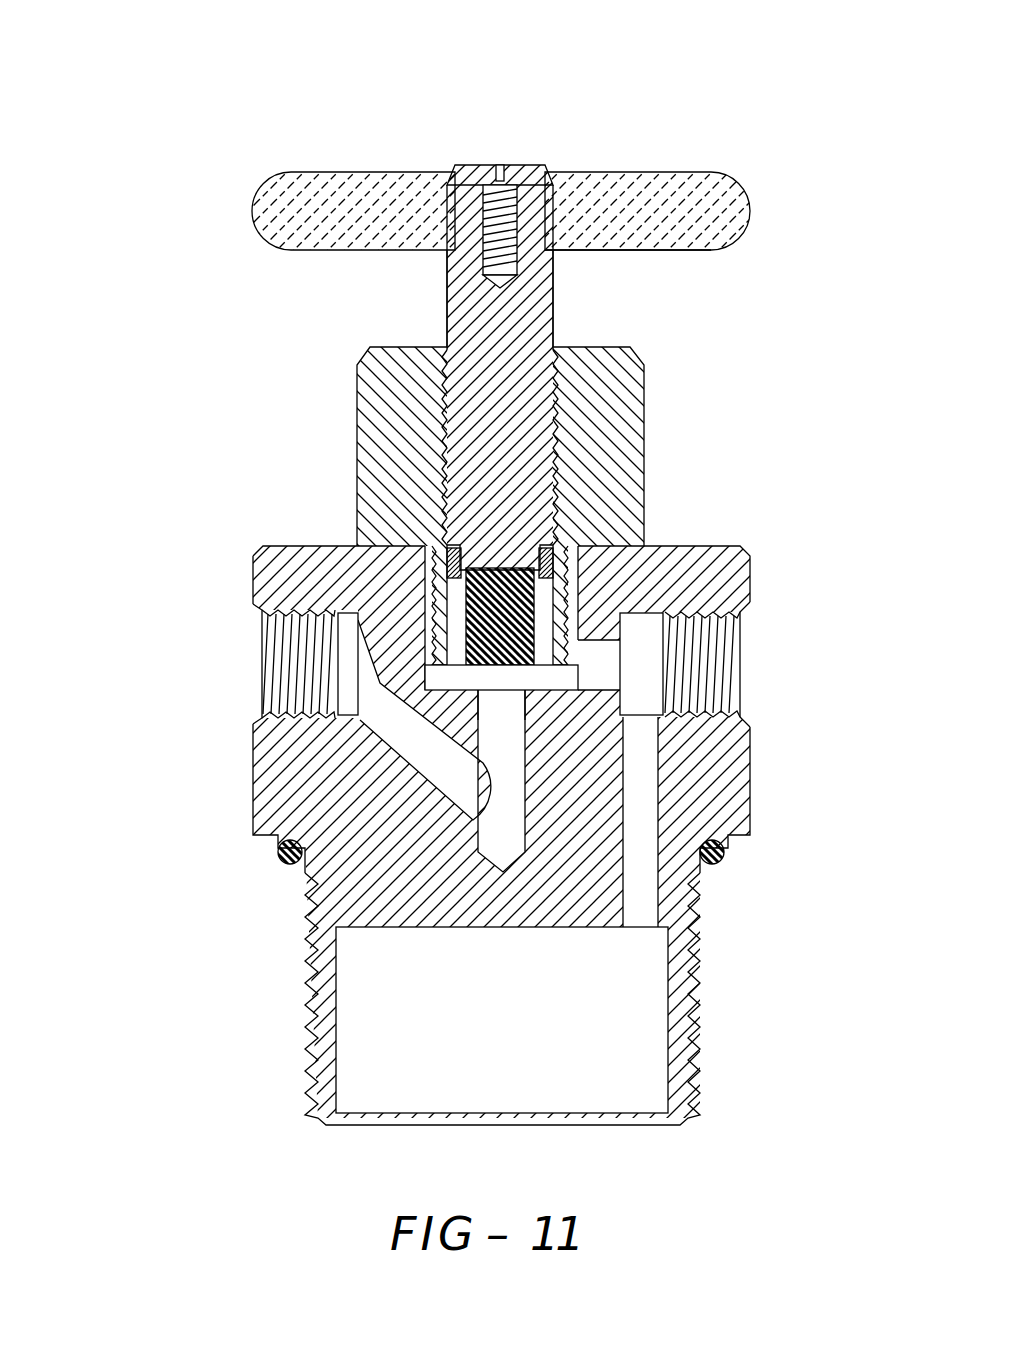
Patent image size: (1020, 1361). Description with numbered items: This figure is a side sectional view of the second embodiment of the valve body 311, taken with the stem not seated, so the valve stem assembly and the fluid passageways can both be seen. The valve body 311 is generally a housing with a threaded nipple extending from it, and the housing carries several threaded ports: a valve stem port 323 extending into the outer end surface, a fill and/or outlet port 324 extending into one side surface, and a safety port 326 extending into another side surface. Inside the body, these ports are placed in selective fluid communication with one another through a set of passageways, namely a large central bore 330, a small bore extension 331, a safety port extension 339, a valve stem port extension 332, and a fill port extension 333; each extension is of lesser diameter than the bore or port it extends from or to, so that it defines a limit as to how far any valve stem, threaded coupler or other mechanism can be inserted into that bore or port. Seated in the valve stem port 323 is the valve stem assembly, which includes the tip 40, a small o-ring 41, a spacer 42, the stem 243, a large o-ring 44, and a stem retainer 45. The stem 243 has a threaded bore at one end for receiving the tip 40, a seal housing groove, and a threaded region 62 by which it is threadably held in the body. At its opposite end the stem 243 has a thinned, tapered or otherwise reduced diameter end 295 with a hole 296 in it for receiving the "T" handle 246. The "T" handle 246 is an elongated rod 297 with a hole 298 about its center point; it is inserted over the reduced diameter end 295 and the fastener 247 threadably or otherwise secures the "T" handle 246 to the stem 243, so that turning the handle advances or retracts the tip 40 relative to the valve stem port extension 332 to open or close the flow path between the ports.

The "T" handle 246 is at (575, 177).
The fastener 247 is at (543, 172).
The reduced diameter end 295 is at (458, 175).
The elongated rod 297 is at (735, 172).
The hole 296 is at (498, 268).
The hole 298 is at (545, 240).
The stem 243 is at (556, 305).
The stem retainer 45 is at (358, 385).
The threaded region 62 is at (445, 415).
The spacer 42 is at (549, 585).
The large o-ring 44 is at (600, 548).
The small o-ring 41 is at (555, 578).
The valve stem port 323 is at (557, 690).
The fill and/or outlet port 324 is at (257, 640).
The safety port 326 is at (750, 665).
The fill port extension 333 is at (380, 732).
The safety port extension 339 is at (612, 680).
The small bore extension 331 is at (645, 905).
The valve stem port extension 332 is at (483, 845).
The large central bore 330 is at (540, 1079).
The tip 40 is at (492, 685).
The valve body 311 is at (245, 1017).